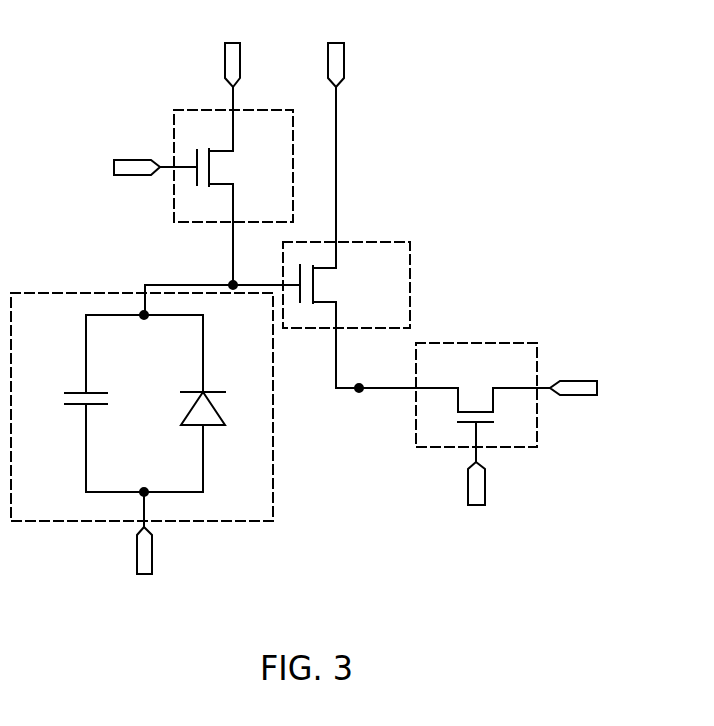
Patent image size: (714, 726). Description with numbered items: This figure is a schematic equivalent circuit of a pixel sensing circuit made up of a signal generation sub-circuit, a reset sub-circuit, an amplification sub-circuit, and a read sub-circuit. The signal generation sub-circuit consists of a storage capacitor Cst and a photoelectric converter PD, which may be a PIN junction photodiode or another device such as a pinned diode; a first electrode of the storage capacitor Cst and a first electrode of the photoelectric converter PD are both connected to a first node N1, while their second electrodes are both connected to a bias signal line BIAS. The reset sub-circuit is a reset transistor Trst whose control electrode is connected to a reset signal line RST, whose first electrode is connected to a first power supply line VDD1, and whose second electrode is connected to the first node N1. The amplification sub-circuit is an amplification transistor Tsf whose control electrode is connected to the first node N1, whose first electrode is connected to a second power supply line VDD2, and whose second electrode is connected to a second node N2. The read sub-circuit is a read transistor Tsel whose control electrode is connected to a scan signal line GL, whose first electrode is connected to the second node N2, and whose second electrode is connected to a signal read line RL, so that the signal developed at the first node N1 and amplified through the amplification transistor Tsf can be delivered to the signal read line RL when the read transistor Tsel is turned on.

The first power supply line VDD1 is at (233, 50).
The second power supply line VDD2 is at (336, 50).
The reset signal line RST is at (136, 153).
The reset transistor Trst is at (226, 186).
The first node N1 is at (222, 274).
The amplification transistor Tsf is at (346, 237).
The second node N2 is at (397, 372).
The read transistor Tsel is at (483, 402).
The signal read line RL is at (574, 371).
The scan signal line GL is at (476, 502).
The storage capacitor Cst is at (112, 390).
The photoelectric converter PD is at (221, 403).
The bias signal line BIAS is at (144, 549).